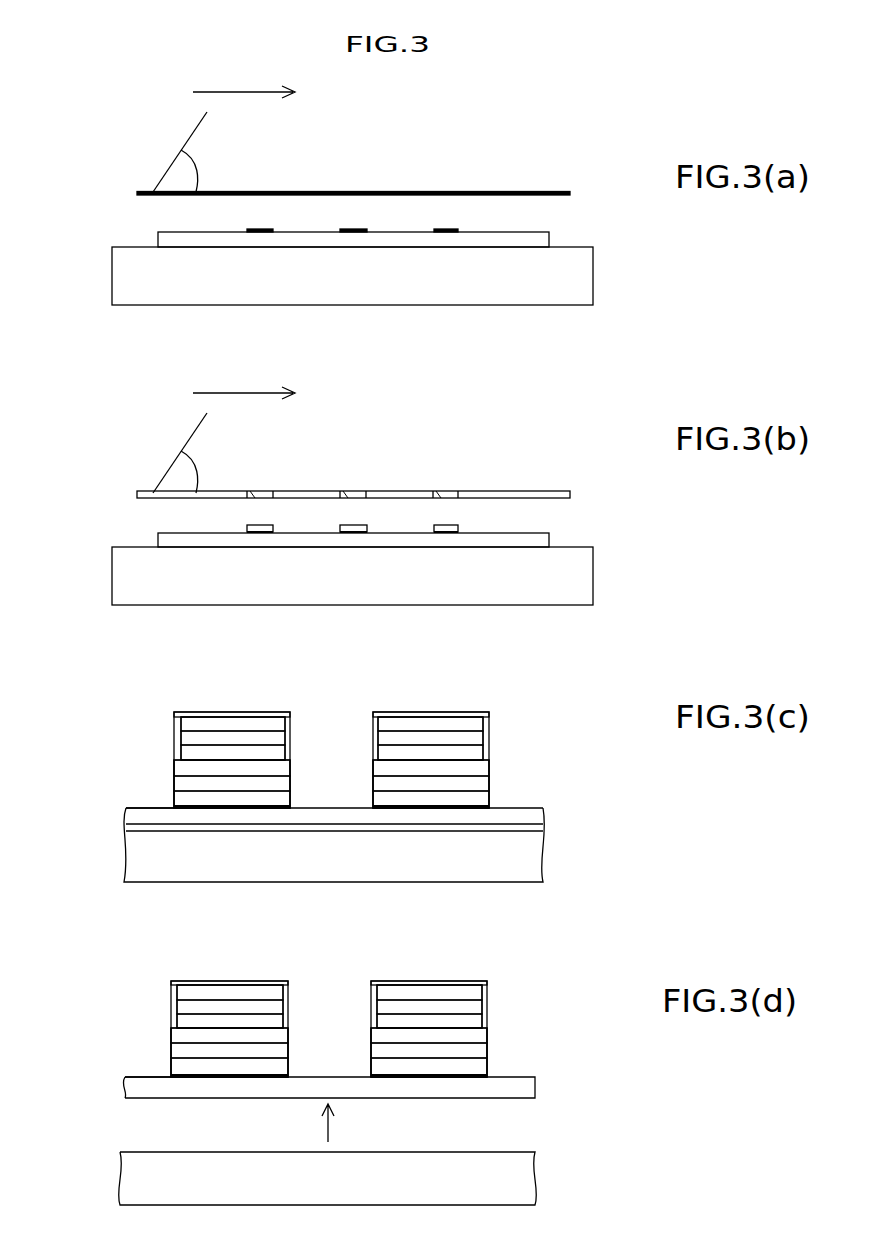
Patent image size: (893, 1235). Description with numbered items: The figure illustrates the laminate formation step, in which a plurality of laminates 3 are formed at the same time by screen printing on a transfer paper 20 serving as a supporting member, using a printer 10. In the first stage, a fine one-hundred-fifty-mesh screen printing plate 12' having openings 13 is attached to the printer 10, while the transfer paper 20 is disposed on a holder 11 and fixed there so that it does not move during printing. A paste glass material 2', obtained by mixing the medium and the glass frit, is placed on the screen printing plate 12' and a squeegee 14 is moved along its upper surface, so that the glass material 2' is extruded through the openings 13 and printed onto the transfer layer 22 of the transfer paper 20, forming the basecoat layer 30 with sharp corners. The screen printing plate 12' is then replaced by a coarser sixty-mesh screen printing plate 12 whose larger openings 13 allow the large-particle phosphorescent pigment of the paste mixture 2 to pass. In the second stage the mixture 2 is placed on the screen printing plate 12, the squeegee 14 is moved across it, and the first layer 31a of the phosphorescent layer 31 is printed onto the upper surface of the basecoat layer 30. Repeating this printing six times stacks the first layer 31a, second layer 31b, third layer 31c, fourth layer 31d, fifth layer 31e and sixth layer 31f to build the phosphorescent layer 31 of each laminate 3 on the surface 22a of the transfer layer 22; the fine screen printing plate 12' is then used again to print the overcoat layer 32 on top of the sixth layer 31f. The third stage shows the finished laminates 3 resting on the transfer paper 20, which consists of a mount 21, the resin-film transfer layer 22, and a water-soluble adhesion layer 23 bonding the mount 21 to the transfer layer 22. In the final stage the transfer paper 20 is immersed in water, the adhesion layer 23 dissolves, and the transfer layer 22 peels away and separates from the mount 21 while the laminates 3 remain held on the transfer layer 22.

The mixture 2 is at (138, 457).
The paste glass material 2' is at (137, 156).
The laminate 3 is at (173, 675).
The printer 10 is at (564, 93).
The holder 11 is at (593, 275).
The screen printing plate 12 is at (364, 454).
The screen printing plate 12' is at (367, 152).
The openings 13 is at (262, 192).
The squeegee 14 is at (193, 118).
The transfer paper 20 is at (141, 249).
The mount 21 is at (543, 855).
The transfer layer 22 is at (543, 815).
The surface of the transfer layer 22a is at (158, 794).
The adhesion layer 23 is at (543, 828).
The basecoat layer 30 is at (448, 230).
The phosphorescent layer 31 is at (600, 643).
The first layer 31a is at (256, 526).
The second layer 31b is at (489, 783).
The third layer 31c is at (489, 768).
The fourth layer 31d is at (483, 752).
The fifth layer 31e is at (483, 738).
The sixth layer 31f is at (483, 724).
The overcoat layer 32 is at (233, 712).